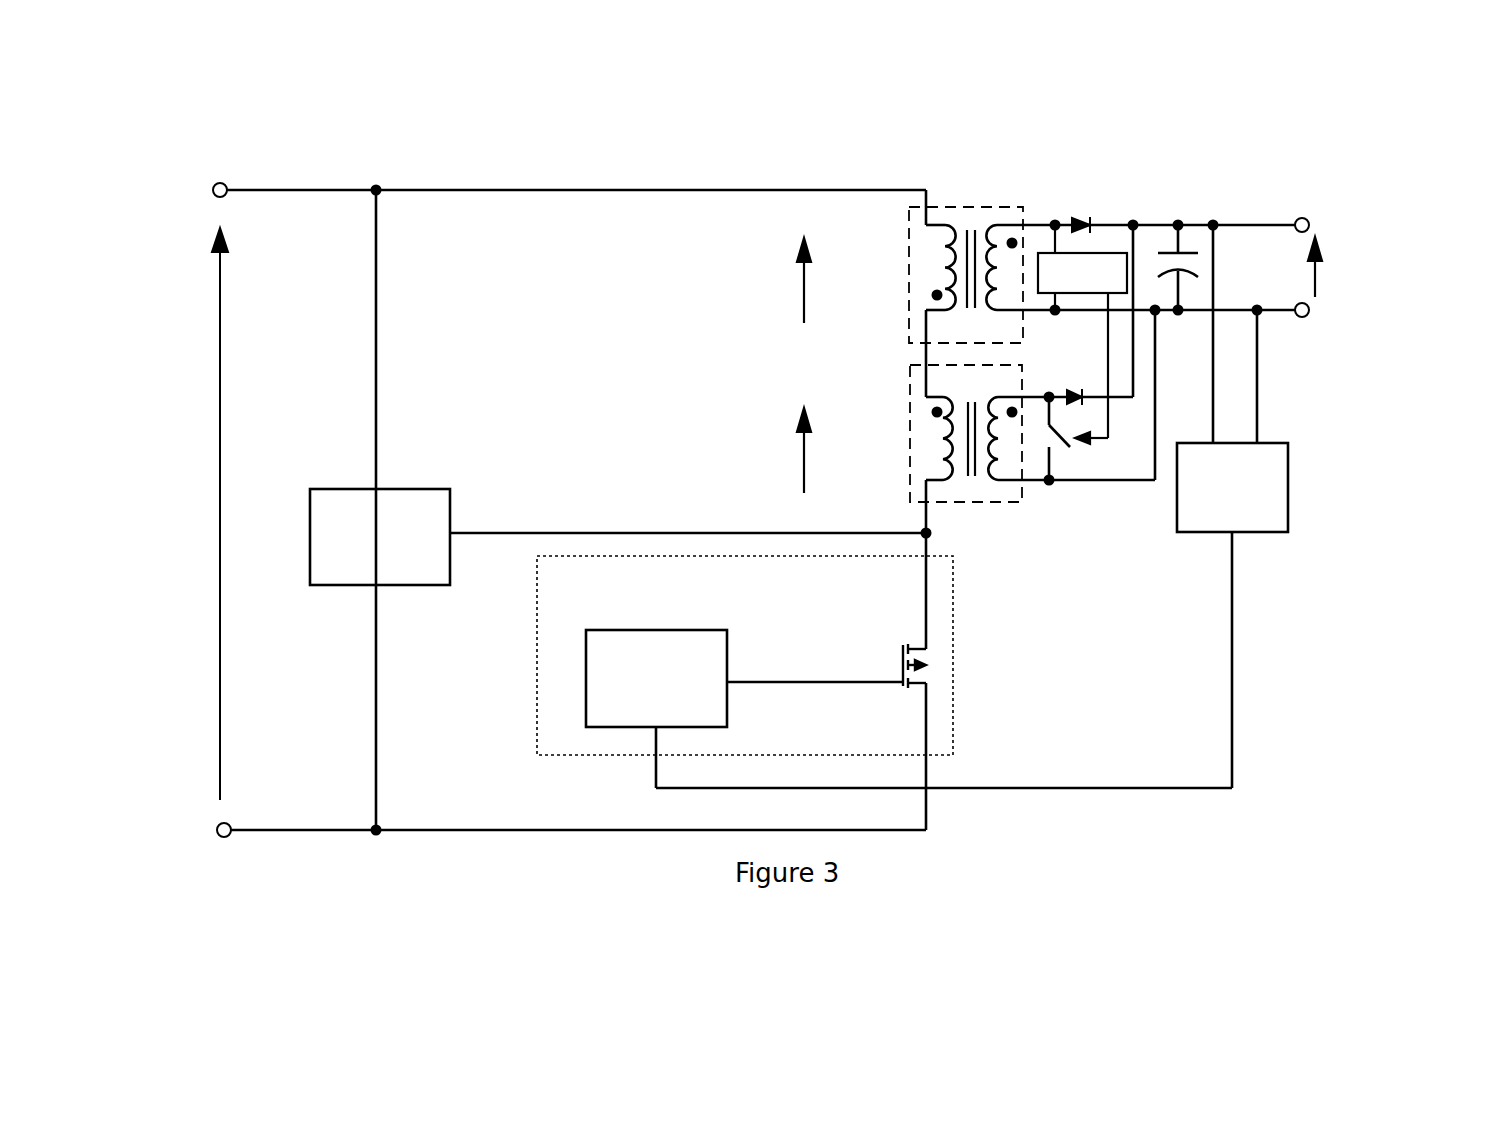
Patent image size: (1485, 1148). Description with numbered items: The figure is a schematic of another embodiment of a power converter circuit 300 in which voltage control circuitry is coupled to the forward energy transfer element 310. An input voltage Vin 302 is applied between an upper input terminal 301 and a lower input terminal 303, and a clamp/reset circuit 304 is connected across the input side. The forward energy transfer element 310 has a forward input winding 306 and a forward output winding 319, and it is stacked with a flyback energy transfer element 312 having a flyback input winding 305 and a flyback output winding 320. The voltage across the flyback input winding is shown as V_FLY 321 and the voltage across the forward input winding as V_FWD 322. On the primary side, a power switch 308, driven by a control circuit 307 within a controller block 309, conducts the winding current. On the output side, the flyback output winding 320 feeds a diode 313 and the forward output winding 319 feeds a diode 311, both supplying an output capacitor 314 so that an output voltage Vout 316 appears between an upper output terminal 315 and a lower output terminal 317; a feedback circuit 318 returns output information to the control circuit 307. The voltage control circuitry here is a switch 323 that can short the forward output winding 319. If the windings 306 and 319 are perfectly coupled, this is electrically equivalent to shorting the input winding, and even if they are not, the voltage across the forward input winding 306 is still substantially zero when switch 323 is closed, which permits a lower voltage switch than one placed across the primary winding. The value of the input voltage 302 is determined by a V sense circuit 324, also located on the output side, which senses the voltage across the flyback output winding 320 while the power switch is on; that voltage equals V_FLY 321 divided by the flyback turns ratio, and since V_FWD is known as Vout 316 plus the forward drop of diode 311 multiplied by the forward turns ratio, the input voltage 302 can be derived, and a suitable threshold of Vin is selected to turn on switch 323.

The power converter 300 is at (342, 144).
The input terminal 301 is at (236, 203).
The input voltage 302 is at (180, 492).
The input terminal 303 is at (216, 832).
The clamp/reset circuit 304 is at (333, 487).
The flyback input winding 305 is at (945, 258).
The forward input winding 306 is at (943, 437).
The control circuit 307 is at (608, 728).
The power switch 308 is at (931, 683).
The controller block 309 is at (954, 585).
The forward energy transfer element 310 is at (965, 503).
The diode 311 is at (1063, 385).
The flyback transformer 312 is at (995, 200).
The flyback rectifier diode 313 is at (1085, 215).
The output capacitor 314 is at (1198, 240).
The output terminal 315 is at (1312, 218).
The output voltage 316 is at (1398, 264).
The output terminal 317 is at (1315, 320).
The feedback circuit 318 is at (1256, 535).
The forward output winding 319 is at (995, 455).
The flyback output winding 320 is at (1000, 275).
The flyback voltage V_FLY 321 is at (750, 283).
The forward voltage VFWD 322 is at (750, 451).
The switch 323 is at (1075, 449).
The V sense circuit 324 is at (1112, 240).